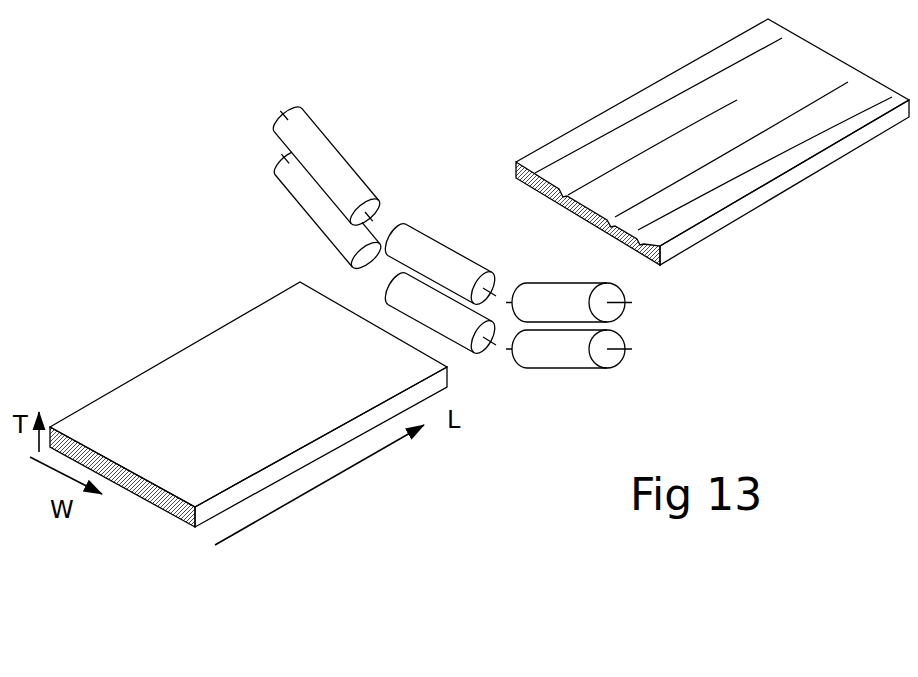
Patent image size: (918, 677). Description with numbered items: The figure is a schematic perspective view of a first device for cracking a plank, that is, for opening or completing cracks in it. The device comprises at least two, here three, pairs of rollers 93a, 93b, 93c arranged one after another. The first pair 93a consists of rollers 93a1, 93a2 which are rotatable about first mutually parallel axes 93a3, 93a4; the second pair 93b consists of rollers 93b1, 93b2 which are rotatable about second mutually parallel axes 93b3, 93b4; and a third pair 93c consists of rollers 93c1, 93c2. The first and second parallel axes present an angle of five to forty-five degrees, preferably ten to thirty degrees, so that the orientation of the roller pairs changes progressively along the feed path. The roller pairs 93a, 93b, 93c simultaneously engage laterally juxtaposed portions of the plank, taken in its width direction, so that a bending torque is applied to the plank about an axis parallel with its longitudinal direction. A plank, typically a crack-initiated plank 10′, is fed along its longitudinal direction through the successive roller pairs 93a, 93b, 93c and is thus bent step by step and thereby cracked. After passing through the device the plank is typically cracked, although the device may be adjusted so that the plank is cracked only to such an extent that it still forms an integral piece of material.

The crack-initiated plank 10′ is at (160, 392).
The first pair of rollers 93a is at (294, 136).
The roller of first pair 93a1 is at (360, 200).
The roller of first pair 93a2 is at (307, 213).
The first parallel axis 93a3 is at (277, 108).
The first parallel axis 93a4 is at (277, 155).
The second pair of rollers 93b is at (470, 284).
The roller of second pair 93b1 is at (407, 235).
The roller of second pair 93b2 is at (480, 348).
The second parallel axis 93b3 is at (502, 298).
The second parallel axis 93b4 is at (491, 345).
The third pair of rollers 93c is at (640, 329).
The roller of third pair 93c1 is at (617, 293).
The roller of third pair 93c2 is at (603, 361).